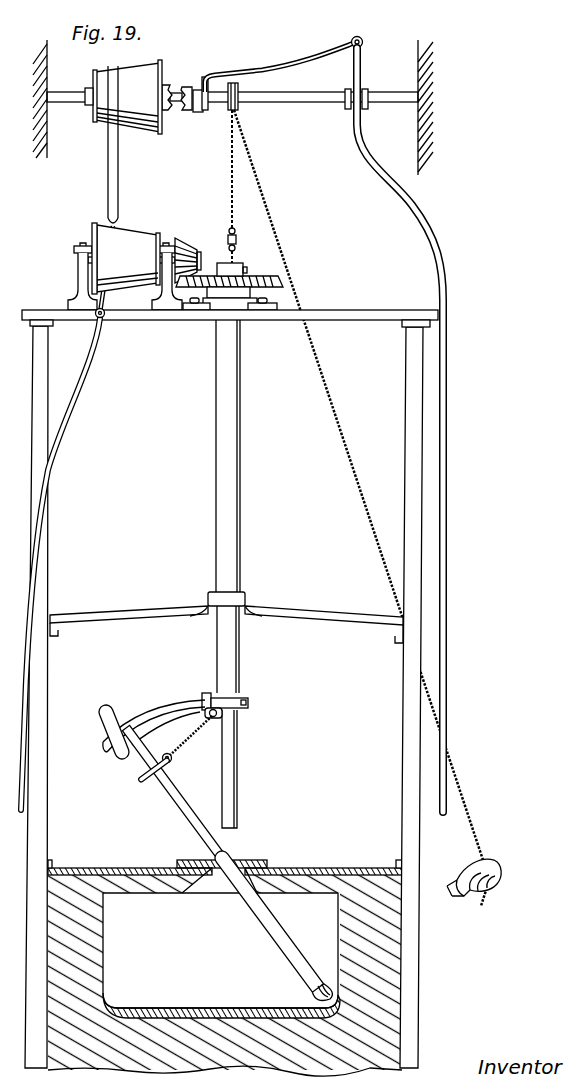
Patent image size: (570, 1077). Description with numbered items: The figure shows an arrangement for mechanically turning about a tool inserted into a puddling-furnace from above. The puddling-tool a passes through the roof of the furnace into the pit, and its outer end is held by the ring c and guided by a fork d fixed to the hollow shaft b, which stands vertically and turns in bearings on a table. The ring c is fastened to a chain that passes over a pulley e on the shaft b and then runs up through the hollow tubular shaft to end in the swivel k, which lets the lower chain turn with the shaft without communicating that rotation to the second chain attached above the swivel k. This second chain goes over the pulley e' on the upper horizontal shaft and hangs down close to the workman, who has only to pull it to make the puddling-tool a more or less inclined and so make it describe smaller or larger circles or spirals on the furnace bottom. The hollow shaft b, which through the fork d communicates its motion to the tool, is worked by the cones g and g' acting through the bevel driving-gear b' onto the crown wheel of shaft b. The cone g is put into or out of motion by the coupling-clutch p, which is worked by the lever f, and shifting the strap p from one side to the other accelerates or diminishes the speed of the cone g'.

The cone g is at (123, 97).
The coupling-clutch p is at (109, 189).
The lever f is at (232, 425).
The pulley e' is at (241, 90).
The swivel k is at (237, 186).
The cone g' is at (125, 266).
The driving-gear b' is at (194, 259).
The hollow shaft b is at (229, 544).
The fork d is at (154, 726).
The pulley e is at (222, 708).
The ring c is at (181, 739).
The puddling-tool a is at (215, 852).